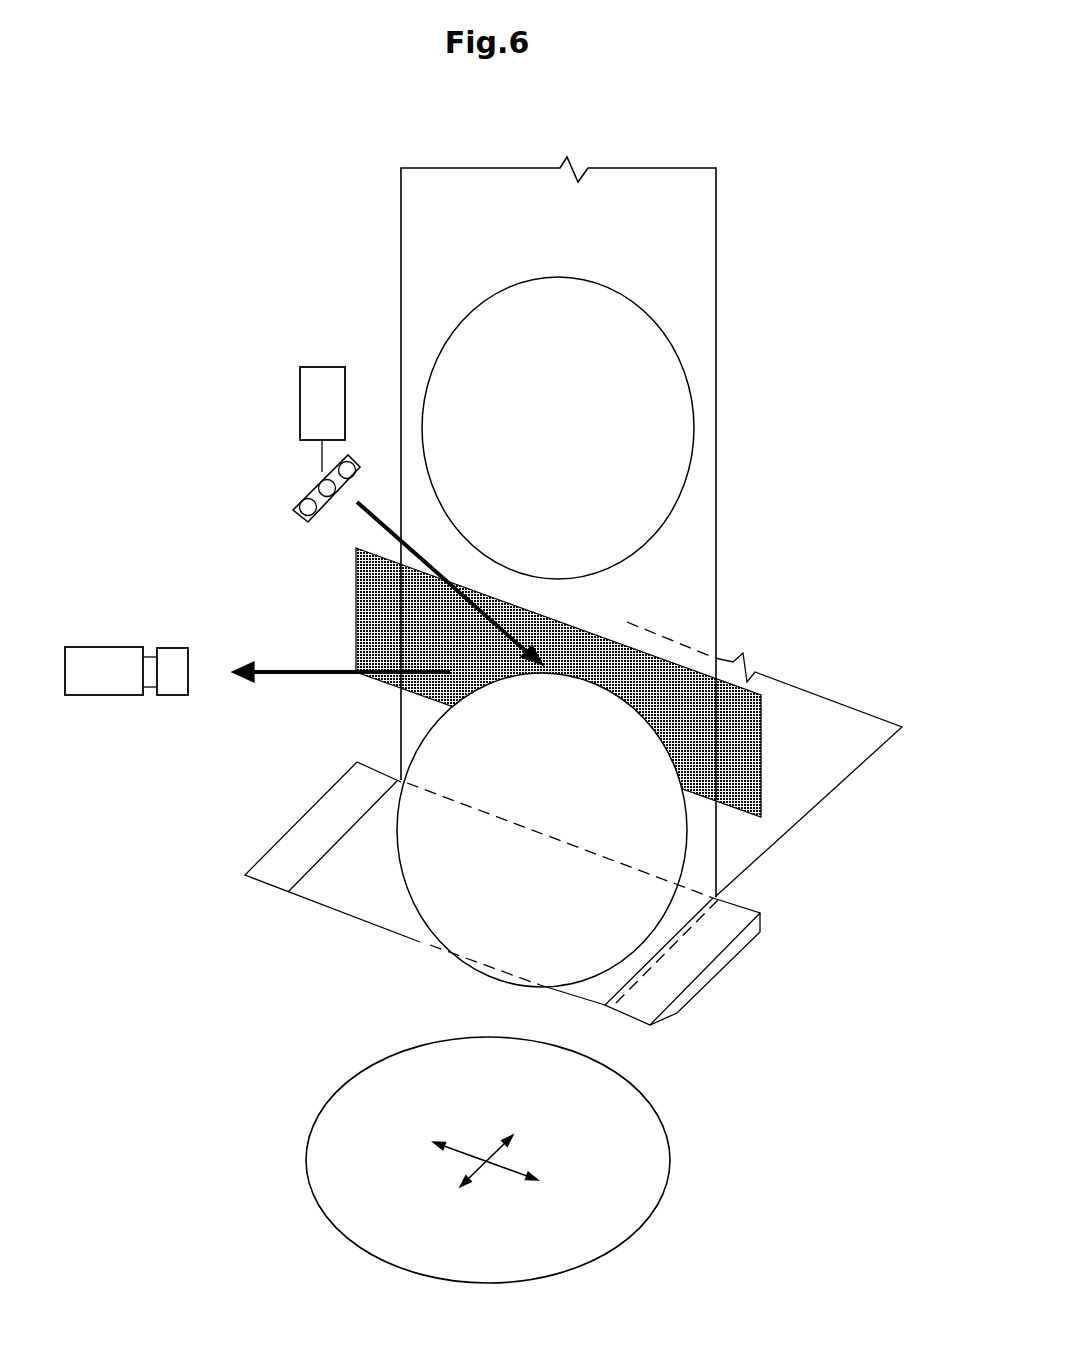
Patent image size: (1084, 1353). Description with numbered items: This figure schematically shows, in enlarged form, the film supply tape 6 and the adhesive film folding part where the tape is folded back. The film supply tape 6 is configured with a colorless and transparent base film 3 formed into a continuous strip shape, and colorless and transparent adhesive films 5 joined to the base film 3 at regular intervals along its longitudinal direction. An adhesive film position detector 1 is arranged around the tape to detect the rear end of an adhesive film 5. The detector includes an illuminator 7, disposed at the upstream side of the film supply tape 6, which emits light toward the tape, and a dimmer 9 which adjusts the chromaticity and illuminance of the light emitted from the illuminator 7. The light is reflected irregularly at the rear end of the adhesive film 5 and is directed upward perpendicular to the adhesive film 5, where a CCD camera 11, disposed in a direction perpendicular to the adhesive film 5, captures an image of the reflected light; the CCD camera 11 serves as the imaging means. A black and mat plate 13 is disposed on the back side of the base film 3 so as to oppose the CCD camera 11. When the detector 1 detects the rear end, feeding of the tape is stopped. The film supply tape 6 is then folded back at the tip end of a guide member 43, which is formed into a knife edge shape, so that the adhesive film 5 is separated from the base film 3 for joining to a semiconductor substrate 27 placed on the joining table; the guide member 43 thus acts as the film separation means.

The adhesive film position detector 1 is at (220, 353).
The base film 3 is at (722, 258).
The adhesive film 5 is at (694, 412).
The film supply tape 6 is at (797, 253).
The illuminator 7 is at (303, 498).
The dimmer 9 is at (298, 405).
The CCD camera 11 is at (130, 647).
The black and mat plate 13 is at (355, 608).
The semiconductor substrate 27 is at (670, 1142).
The guide member 43 is at (737, 956).